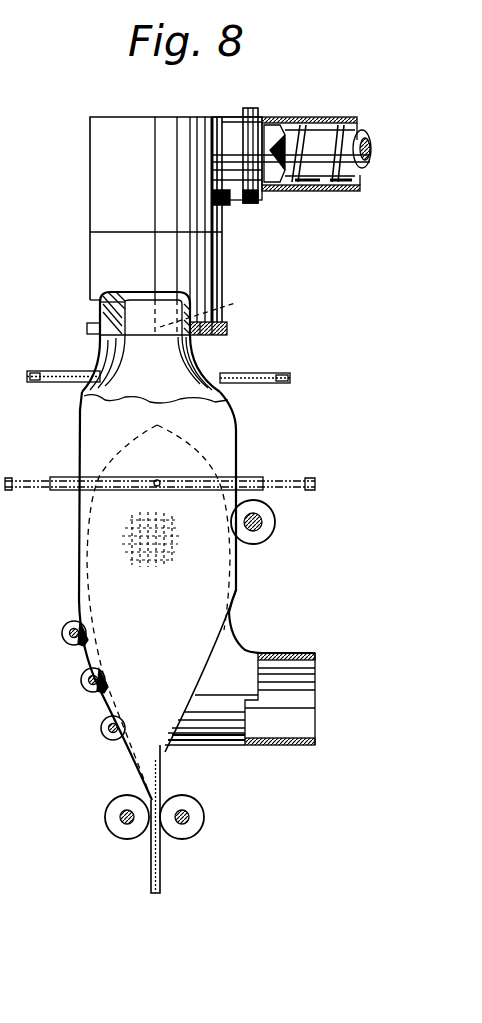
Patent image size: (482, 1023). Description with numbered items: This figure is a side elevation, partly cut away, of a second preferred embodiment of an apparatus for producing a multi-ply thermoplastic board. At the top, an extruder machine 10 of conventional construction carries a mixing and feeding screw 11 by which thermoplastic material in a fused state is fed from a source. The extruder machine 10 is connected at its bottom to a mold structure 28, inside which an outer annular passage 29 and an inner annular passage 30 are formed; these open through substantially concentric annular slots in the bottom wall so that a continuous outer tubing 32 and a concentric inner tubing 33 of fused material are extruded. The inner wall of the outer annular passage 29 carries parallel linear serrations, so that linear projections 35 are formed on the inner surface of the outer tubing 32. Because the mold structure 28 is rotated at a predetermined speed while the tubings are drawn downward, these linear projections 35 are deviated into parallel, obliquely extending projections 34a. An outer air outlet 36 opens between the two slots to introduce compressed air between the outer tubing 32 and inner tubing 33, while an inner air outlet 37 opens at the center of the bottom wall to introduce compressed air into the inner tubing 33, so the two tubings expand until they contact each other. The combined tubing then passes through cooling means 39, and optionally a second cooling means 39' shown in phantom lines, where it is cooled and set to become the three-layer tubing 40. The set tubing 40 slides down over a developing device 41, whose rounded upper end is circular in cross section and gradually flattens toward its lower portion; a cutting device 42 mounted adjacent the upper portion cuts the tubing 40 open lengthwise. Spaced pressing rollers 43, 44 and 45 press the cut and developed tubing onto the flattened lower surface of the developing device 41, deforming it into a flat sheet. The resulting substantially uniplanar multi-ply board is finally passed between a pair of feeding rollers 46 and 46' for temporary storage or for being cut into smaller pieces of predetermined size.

The extruder machine 10 is at (207, 115).
The mixing and feeding screw 11 is at (357, 132).
The mold structure 28 is at (222, 273).
The outer annular passage 29 is at (100, 305).
The inner annular passage 30 is at (87, 327).
The outer tubing 32 is at (100, 360).
The inner tubing 33 is at (135, 388).
The obliquely extending projections 34a is at (168, 540).
The linear projections 35 is at (206, 364).
The outer air outlet 36 is at (100, 346).
The inner air outlet 37 is at (220, 313).
The cooling means 39 is at (255, 362).
The second cooling means 39' is at (160, 464).
The tubing 40 is at (79, 455).
The developing device 41 is at (232, 636).
The cutting device 42 is at (269, 540).
The pressing roller 43 is at (66, 623).
The pressing roller 44 is at (81, 676).
The pressing roller 45 is at (101, 731).
The feeding roller 46 is at (120, 836).
The feeding roller 46' is at (192, 836).